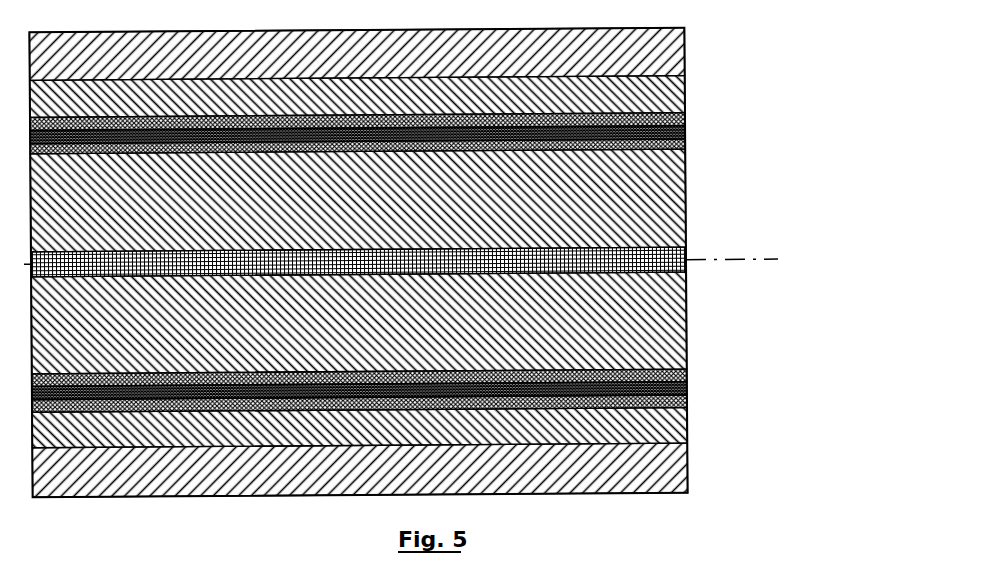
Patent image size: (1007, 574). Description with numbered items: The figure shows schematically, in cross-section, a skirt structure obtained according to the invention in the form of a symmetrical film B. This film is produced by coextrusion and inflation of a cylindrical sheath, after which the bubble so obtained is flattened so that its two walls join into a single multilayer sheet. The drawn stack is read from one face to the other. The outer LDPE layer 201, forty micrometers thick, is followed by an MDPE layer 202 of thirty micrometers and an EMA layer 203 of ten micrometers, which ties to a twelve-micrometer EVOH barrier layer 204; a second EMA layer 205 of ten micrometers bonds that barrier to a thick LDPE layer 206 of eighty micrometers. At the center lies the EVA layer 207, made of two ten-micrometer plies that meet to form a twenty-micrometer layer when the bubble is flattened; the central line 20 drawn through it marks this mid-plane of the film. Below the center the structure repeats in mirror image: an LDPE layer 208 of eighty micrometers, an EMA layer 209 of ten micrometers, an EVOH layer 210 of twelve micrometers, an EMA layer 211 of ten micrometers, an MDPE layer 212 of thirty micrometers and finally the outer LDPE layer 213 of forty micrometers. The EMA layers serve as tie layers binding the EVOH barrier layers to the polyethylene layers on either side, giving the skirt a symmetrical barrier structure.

The LDPE layer 201 is at (668, 55).
The MDPE layer 202 is at (667, 90).
The EMA layer 203 is at (684, 119).
The EVOH layer 204 is at (684, 130).
The EMA layer 205 is at (684, 147).
The LDPE layer 206 is at (670, 208).
The EVA layer 207 is at (687, 250).
The section line of the layered stack 20 is at (696, 263).
The LDPE layer 208 is at (665, 322).
The EMA layer 209 is at (695, 363).
The EVOH layer 210 is at (687, 387).
The EMA layer 211 is at (687, 404).
The MDPE layer 212 is at (687, 432).
The LDPE layer 213 is at (672, 470).